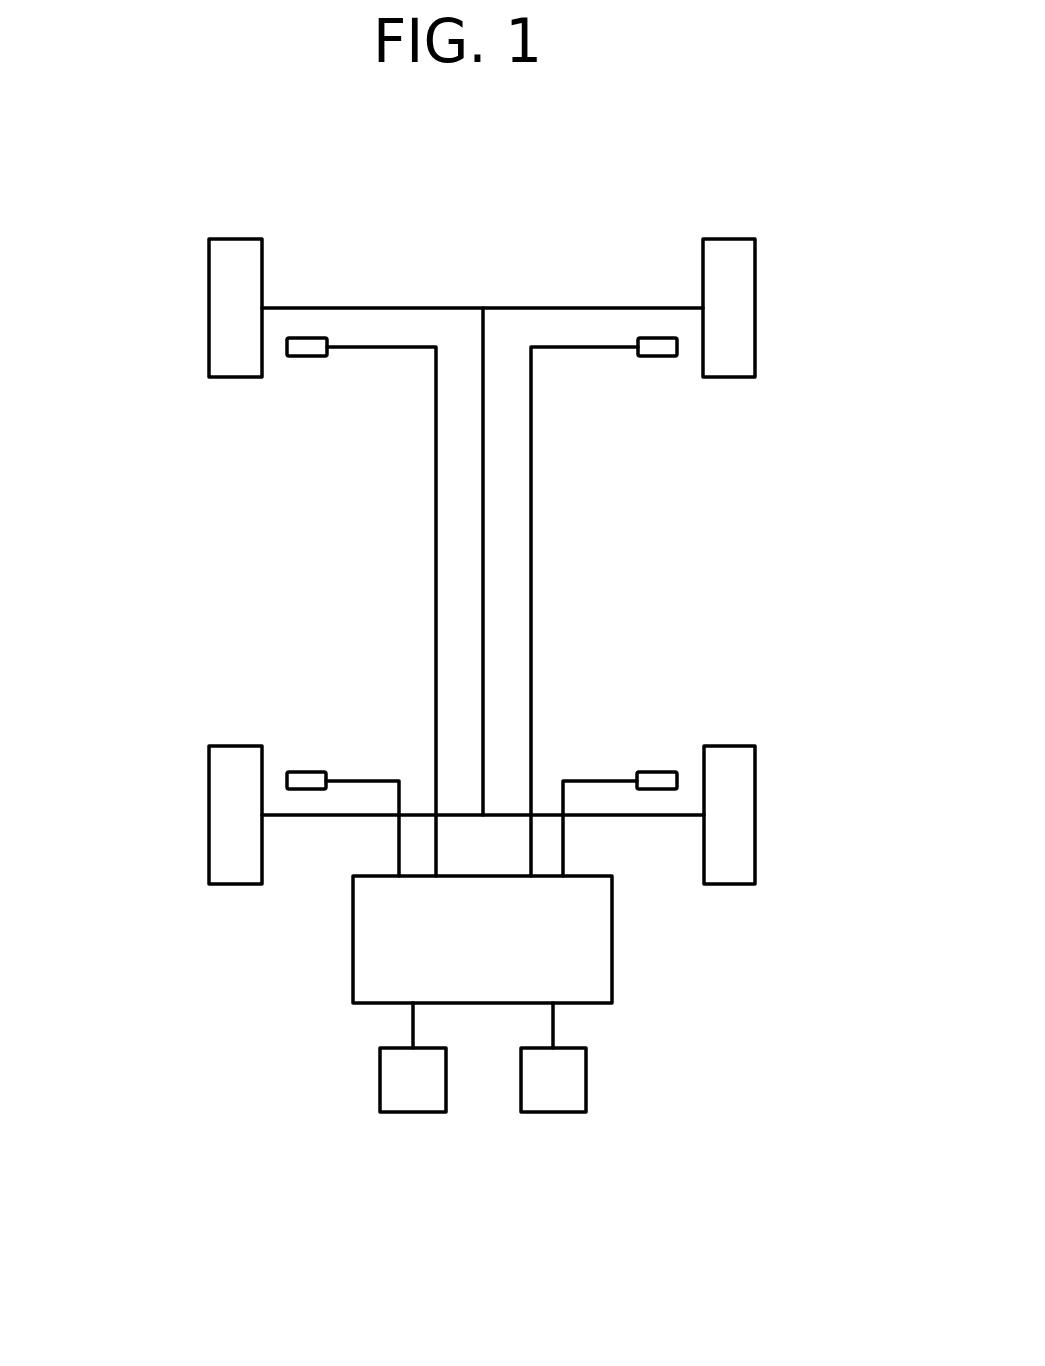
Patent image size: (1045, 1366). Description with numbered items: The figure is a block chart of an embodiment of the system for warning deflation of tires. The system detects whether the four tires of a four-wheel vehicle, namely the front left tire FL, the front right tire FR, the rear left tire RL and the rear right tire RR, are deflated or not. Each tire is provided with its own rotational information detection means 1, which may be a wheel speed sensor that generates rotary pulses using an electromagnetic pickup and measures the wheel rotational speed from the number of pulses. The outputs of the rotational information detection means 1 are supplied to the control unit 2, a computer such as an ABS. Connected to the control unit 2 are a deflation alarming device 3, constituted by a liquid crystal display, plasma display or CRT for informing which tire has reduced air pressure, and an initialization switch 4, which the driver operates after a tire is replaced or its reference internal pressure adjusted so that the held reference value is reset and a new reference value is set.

The rotational information detection means 1 is at (297, 347).
The control unit 2 is at (598, 983).
The deflation alarming device 3 is at (410, 1098).
The initialization switch 4 is at (550, 1098).
The front left tire FL is at (223, 278).
The front right tire FR is at (738, 283).
The rear left tire RL is at (223, 797).
The rear right tire RR is at (738, 801).